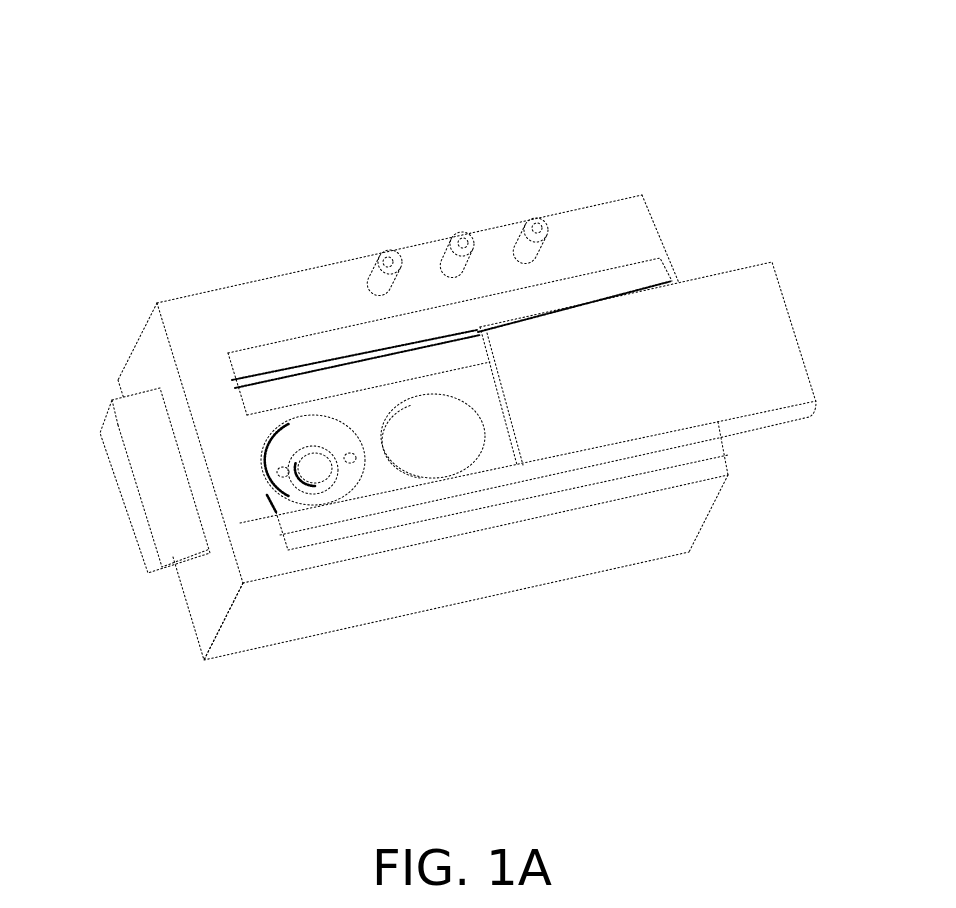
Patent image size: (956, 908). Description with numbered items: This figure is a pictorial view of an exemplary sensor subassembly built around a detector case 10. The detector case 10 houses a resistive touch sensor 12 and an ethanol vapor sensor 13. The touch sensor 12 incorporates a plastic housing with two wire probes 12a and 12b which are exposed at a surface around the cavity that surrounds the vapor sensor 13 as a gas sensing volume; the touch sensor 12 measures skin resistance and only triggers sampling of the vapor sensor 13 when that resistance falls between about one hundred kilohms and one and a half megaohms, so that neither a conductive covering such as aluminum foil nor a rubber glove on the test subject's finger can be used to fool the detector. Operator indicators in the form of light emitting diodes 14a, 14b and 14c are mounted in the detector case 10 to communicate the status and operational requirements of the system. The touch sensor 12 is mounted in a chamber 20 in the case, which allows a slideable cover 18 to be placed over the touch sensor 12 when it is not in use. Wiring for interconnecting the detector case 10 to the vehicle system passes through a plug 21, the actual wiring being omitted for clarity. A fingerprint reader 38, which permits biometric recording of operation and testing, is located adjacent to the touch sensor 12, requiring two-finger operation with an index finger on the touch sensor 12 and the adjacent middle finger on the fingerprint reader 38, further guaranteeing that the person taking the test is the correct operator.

The detector case 10 is at (208, 314).
The resistive touch sensor 12 is at (284, 435).
The wire probe 12a is at (240, 566).
The wire probe 12b is at (343, 478).
The ethanol vapor sensor 13 is at (318, 466).
The light emitting diode 14a is at (388, 252).
The light emitting diode 14b is at (457, 233).
The light emitting diode 14c is at (534, 228).
The slideable cover 18 is at (697, 333).
The chamber 20 is at (374, 367).
The plug 21 is at (137, 450).
The fingerprint reader 38 is at (440, 440).